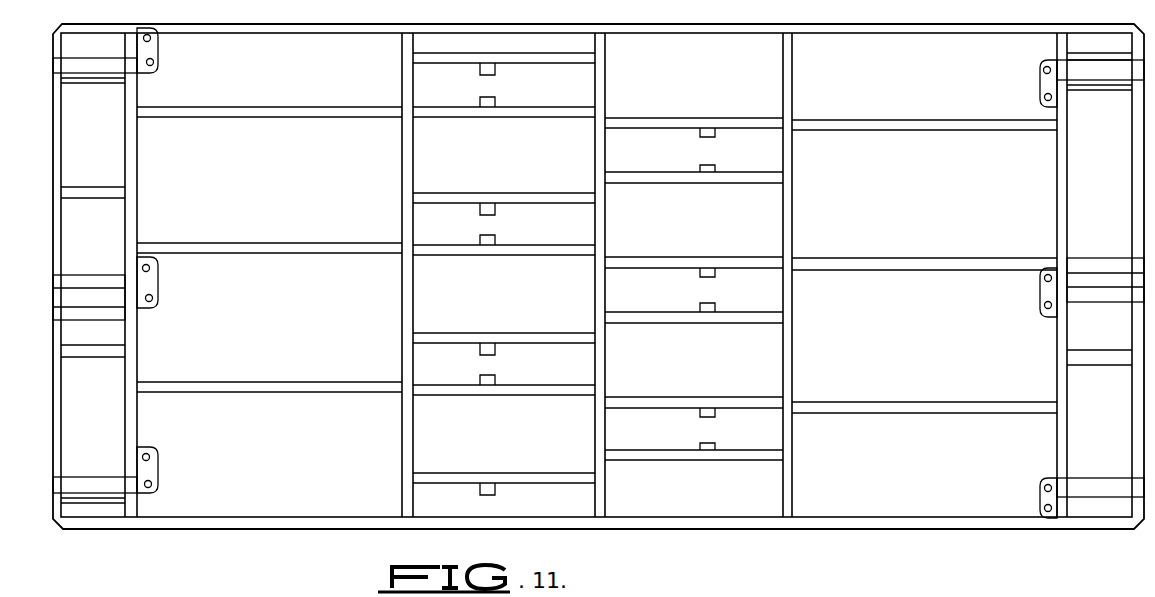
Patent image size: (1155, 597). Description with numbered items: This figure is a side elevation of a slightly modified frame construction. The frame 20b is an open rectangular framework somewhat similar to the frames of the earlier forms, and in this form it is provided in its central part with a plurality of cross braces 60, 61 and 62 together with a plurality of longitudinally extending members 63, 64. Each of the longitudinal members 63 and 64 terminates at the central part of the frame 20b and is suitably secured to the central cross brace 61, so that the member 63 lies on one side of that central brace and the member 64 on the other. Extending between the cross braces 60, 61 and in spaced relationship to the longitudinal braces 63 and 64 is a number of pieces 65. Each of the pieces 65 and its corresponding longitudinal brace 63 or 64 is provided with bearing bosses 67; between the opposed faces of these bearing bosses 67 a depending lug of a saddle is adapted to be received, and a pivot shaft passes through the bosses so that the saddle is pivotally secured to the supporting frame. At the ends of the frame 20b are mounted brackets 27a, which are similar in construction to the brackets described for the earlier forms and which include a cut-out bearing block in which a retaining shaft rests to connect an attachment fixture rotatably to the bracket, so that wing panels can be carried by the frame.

The frame 20b is at (848, 530).
The bracket 27a is at (95, 75).
The cross brace 60 is at (402, 330).
The central cross brace 61 is at (606, 358).
The cross brace 62 is at (793, 342).
The longitudinally extending member 63 is at (285, 110).
The longitudinally extending member 64 is at (975, 130).
The piece 65 is at (556, 66).
The bearing boss 67 is at (495, 68).